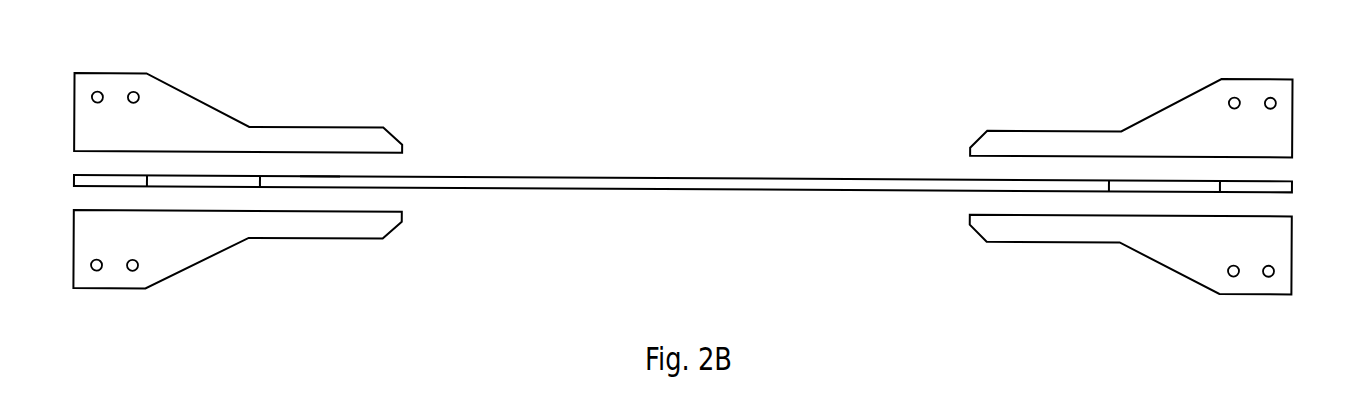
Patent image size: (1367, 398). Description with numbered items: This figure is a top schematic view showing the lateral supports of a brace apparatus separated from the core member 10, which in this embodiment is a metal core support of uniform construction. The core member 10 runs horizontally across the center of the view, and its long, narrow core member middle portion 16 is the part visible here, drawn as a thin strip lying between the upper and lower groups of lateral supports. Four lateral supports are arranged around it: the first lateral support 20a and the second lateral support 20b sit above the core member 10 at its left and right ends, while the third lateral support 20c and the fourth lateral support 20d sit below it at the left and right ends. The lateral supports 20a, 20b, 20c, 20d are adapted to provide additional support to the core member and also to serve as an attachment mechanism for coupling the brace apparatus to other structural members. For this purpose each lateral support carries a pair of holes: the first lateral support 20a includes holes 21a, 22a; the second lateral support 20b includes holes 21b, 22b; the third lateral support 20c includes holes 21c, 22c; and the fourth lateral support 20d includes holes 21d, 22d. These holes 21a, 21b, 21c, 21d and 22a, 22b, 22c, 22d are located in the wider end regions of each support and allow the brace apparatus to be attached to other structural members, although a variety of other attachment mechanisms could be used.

The core member 10 is at (320, 174).
The core member middle portion 16 is at (673, 178).
The first lateral support 20a is at (82, 117).
The second lateral support 20b is at (1290, 124).
The third lateral support 20c is at (82, 247).
The fourth lateral support 20d is at (1290, 257).
The hole 21a is at (97, 90).
The hole 21b is at (1270, 96).
The hole 21c is at (97, 271).
The hole 21d is at (1269, 278).
The hole 22a is at (133, 90).
The hole 22b is at (1234, 96).
The hole 22c is at (137, 269).
The hole 22d is at (1234, 278).